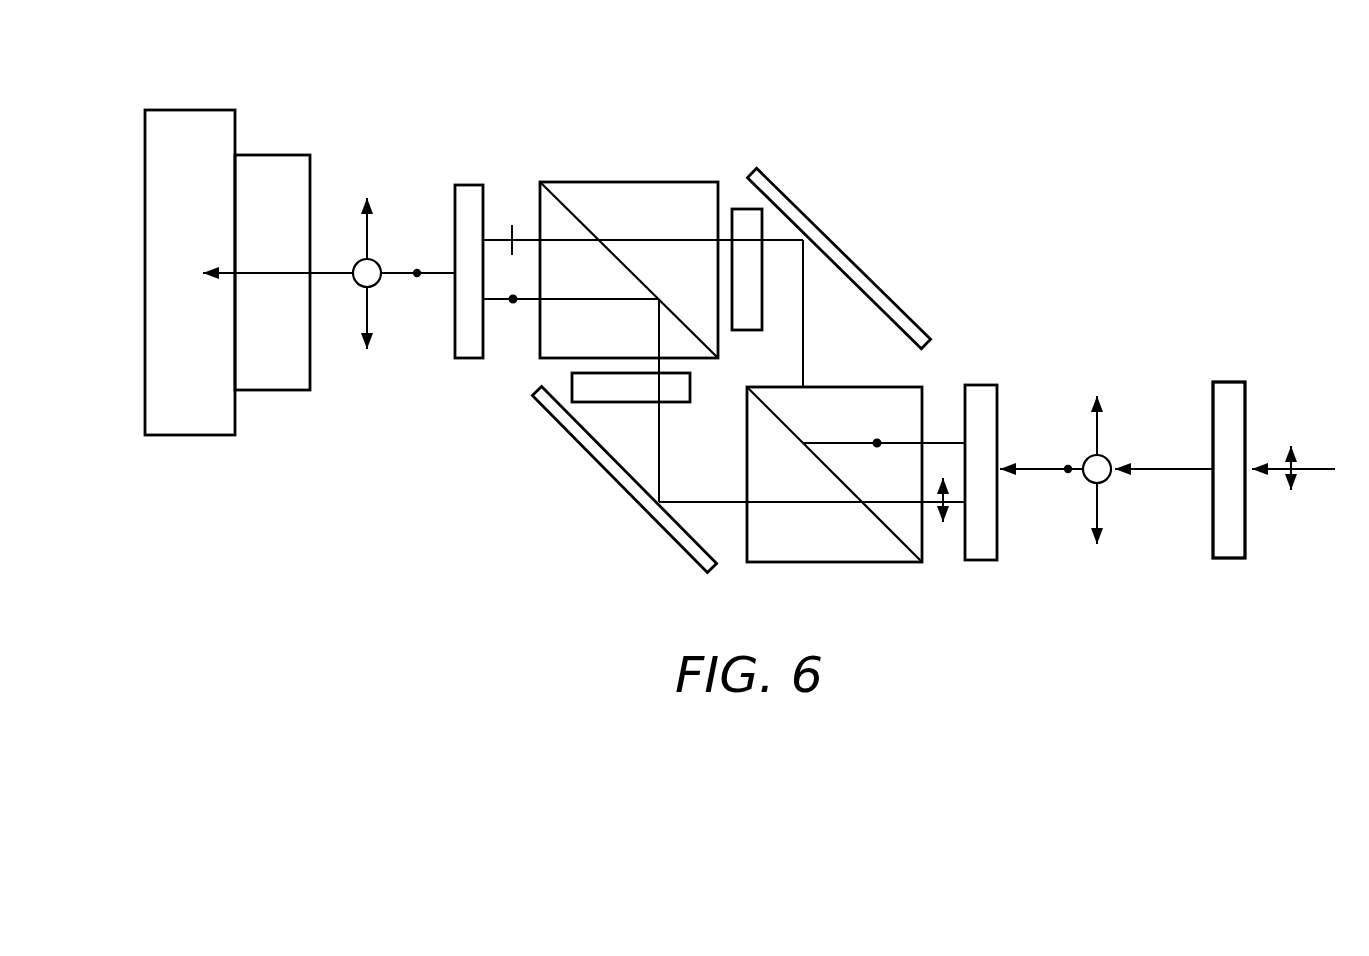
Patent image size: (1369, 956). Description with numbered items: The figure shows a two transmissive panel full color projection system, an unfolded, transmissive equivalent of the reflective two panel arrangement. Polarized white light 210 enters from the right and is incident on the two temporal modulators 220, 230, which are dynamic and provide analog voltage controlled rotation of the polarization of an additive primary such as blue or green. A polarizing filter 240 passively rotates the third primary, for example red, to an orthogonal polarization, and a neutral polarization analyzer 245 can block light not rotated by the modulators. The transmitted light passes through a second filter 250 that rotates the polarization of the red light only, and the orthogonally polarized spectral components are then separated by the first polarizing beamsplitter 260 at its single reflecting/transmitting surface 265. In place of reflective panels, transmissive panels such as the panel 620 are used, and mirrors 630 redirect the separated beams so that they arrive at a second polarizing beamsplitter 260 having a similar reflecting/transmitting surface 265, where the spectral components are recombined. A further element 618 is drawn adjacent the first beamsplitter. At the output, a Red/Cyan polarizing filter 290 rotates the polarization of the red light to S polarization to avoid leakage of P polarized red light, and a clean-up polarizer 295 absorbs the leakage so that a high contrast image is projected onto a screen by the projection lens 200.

The projection lens 200 is at (192, 110).
The white light 210 is at (1308, 467).
The temporal modulator 220 is at (1230, 560).
The temporal modulator 230 is at (1229, 470).
The polarizing filter 240 is at (1100, 510).
The neutral polarization analyzer 245 is at (1038, 468).
The second filter 250 is at (985, 562).
The polarizing beamsplitter 260 is at (627, 182).
The reflecting/transmitting surface 265 is at (563, 195).
The Red/Cyan polarizing filter 290 is at (458, 183).
The clean-up polarizer 295 is at (370, 323).
The mirror / reflector block 618 is at (683, 403).
The transmissive panel 620 is at (745, 208).
The mirror 630 is at (843, 254).